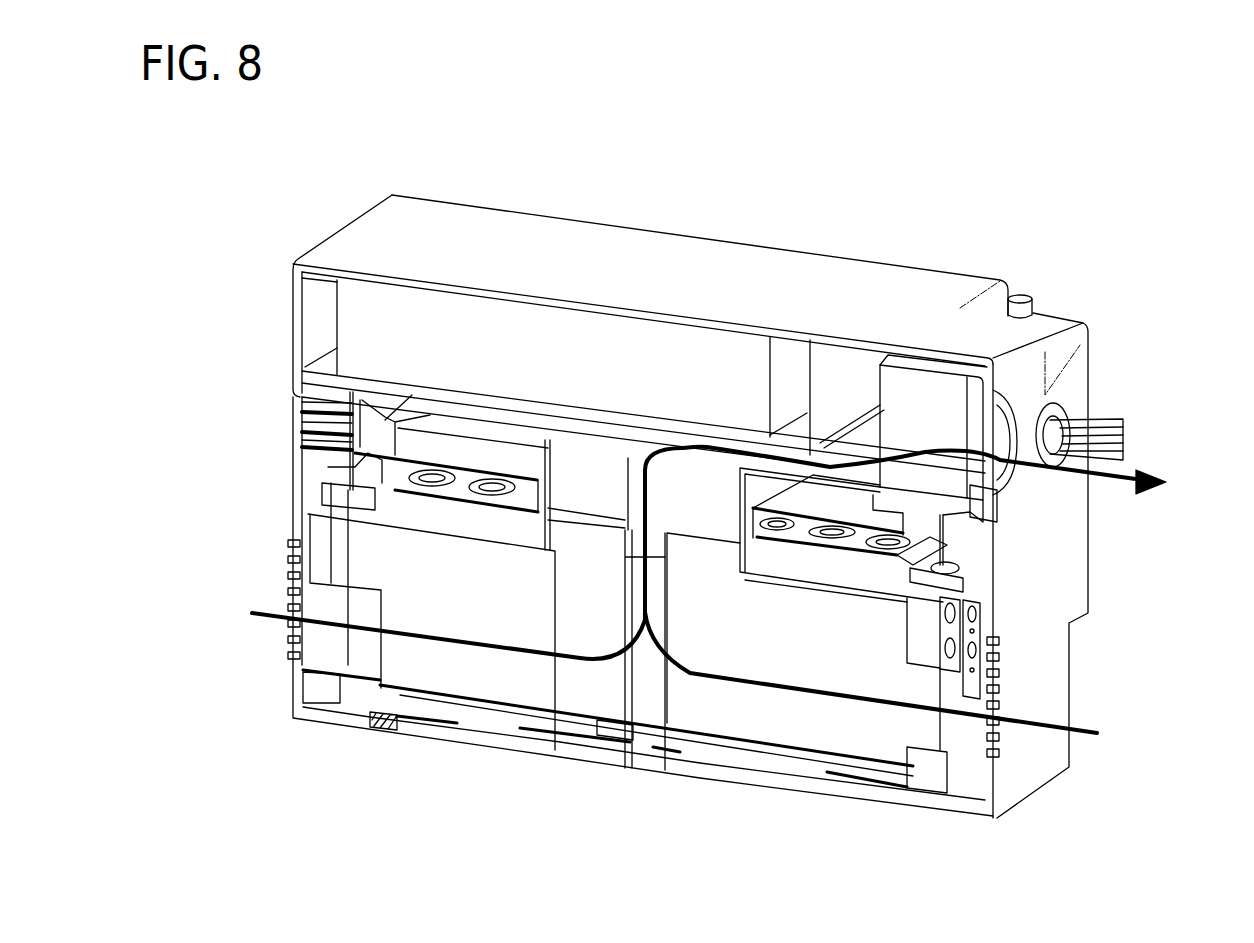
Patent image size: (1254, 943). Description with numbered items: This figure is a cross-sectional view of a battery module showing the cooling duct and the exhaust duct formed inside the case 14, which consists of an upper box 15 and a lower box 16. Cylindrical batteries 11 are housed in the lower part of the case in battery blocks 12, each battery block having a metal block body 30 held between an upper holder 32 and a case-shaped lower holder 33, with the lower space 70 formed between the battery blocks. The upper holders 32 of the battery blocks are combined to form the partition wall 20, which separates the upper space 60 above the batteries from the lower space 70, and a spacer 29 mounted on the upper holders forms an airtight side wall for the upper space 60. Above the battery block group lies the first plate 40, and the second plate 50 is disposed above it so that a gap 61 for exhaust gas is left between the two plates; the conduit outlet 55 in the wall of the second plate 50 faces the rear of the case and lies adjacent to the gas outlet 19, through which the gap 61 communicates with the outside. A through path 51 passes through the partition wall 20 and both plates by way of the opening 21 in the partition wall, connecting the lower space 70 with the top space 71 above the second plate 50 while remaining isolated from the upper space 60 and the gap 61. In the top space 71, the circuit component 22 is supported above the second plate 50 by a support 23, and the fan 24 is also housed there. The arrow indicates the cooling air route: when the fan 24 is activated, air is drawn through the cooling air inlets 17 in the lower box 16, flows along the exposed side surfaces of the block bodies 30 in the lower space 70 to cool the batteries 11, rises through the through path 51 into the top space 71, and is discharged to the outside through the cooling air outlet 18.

The battery 11 is at (493, 478).
The battery block 12 is at (491, 678).
The case 14 is at (1111, 565).
The upper box 15 is at (1073, 377).
The lower box 16 is at (1073, 507).
The cooling air inlet 17 is at (292, 563).
The cooling air outlet 18 is at (1015, 413).
The gas outlet 19 is at (302, 400).
The partition wall 20 is at (840, 573).
The opening 21 is at (737, 565).
The circuit component 22 is at (417, 312).
The support 23 is at (380, 392).
The fan 24 is at (933, 390).
The spacer 29 is at (320, 463).
The block body 30 is at (442, 670).
The upper holder 32 is at (403, 655).
The lower holder 33 is at (368, 650).
The first plate 40 is at (816, 500).
The second plate 50 is at (451, 415).
The through path 51 is at (620, 482).
The conduit outlet 55 is at (302, 424).
The upper space 60 is at (803, 522).
The gap 61 is at (1000, 522).
The lower space 70 is at (552, 692).
The top space 71 is at (672, 445).